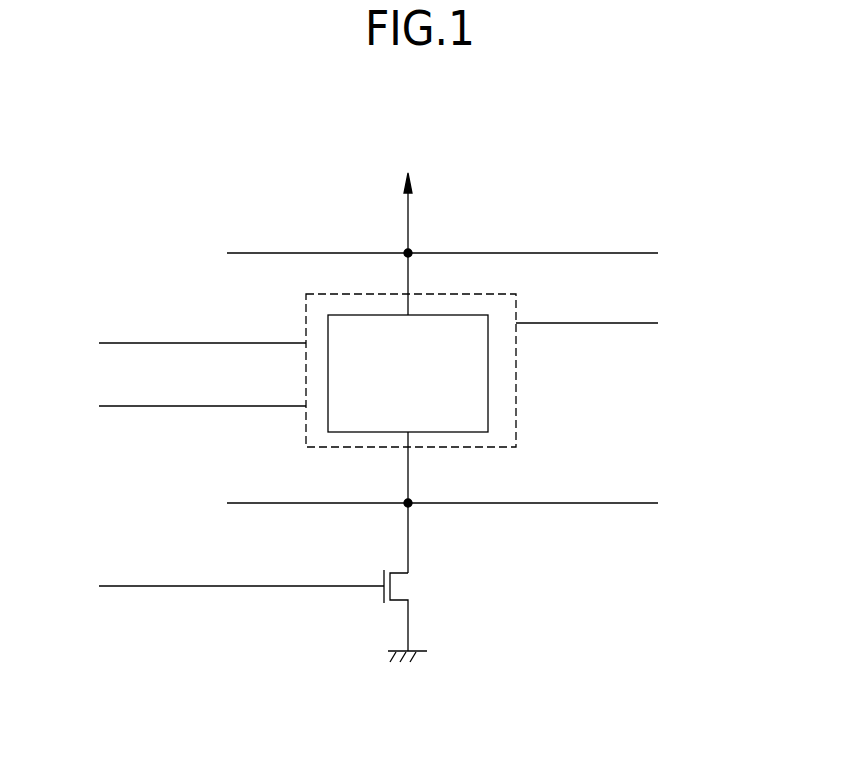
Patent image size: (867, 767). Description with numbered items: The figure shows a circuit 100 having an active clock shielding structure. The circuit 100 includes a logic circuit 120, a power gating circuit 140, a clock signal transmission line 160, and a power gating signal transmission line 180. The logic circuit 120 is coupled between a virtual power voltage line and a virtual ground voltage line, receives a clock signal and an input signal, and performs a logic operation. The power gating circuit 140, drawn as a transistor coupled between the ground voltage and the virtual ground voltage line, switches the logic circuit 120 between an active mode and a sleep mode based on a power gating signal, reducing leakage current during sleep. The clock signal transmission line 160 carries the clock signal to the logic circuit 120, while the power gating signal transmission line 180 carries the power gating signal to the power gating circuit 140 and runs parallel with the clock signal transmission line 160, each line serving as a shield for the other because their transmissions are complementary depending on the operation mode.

The circuit 100 is at (428, 93).
The logic circuit 120 is at (488, 373).
The power gating circuit 140 is at (424, 584).
The clock signal transmission line 160 is at (236, 330).
The power gating signal transmission line 180 is at (261, 603).